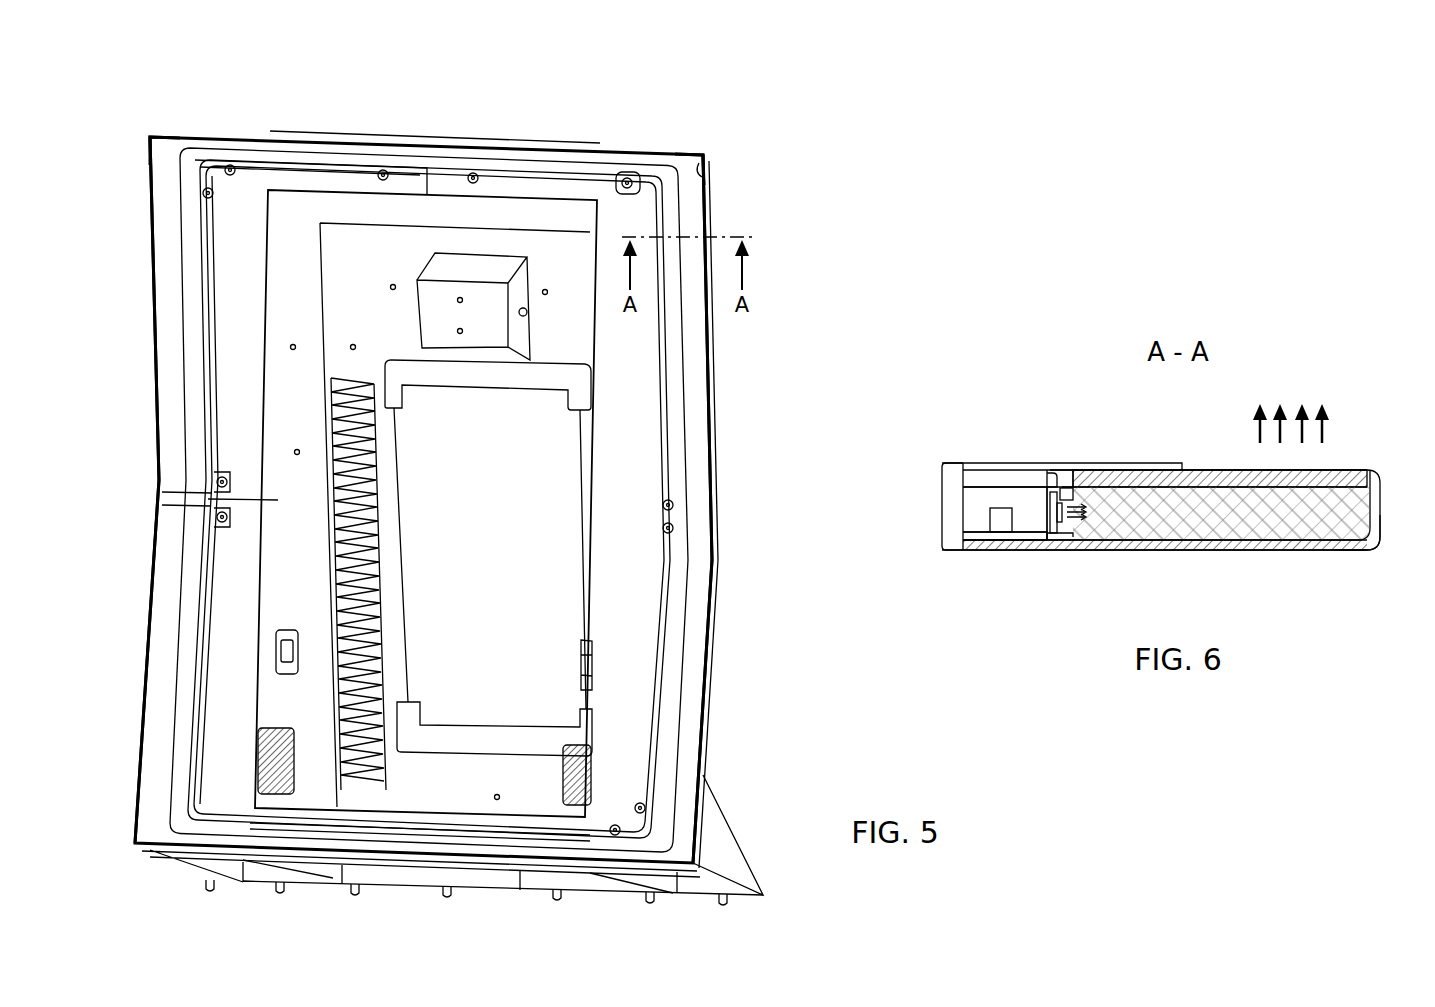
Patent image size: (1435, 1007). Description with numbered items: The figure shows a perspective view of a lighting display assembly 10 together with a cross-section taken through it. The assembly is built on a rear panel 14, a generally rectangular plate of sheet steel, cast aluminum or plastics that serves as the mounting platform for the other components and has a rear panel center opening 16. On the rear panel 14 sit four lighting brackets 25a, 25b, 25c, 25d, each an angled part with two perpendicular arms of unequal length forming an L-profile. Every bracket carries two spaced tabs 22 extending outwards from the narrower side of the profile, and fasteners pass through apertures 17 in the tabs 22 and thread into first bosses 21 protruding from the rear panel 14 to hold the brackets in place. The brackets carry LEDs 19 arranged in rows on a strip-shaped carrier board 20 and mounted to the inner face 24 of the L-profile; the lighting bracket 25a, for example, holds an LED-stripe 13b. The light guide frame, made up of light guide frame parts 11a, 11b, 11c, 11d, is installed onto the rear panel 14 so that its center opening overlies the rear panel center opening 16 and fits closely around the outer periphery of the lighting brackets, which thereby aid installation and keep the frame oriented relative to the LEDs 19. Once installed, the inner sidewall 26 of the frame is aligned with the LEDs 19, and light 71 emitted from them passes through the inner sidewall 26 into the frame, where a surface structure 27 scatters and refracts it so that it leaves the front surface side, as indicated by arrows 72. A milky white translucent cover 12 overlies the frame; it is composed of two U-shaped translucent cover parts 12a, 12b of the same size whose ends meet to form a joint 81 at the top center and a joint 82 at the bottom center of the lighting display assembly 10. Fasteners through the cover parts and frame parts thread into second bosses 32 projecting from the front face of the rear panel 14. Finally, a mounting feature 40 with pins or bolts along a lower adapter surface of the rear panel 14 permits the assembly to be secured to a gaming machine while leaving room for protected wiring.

In FIG. 5, the lighting display assembly 10 is at (706, 134).
In FIG. 5, the light guide frame part 11a is at (708, 197).
In FIG. 6, the light guide frame part 11a is at (1229, 537).
In FIG. 5, the light guide frame part 11b is at (712, 626).
In FIG. 5, the light guide frame part 11c is at (142, 746).
In FIG. 5, the light guide frame part 11d is at (150, 221).
In FIG. 6, the translucent cover 12 is at (1356, 469).
In FIG. 5, the translucent cover part 12a is at (704, 171).
In FIG. 5, the translucent cover part 12b is at (160, 141).
In FIG. 6, the LED-stripe 13b is at (1059, 528).
In FIG. 5, the rear panel 14 is at (345, 255).
In FIG. 6, the rear panel 14 is at (1303, 545).
In FIG. 5, the rear panel center opening 16 is at (543, 440).
In FIG. 5, the aperture 17 is at (624, 177).
In FIG. 6, the LED 19 is at (1066, 535).
In FIG. 6, the strip-shaped carrier board 20 is at (1050, 539).
In FIG. 5, the first boss 21 is at (673, 505).
In FIG. 6, the first boss 21 is at (997, 519).
In FIG. 5, the tab 22 is at (633, 178).
In FIG. 6, the tab 22 is at (977, 538).
In FIG. 6, the inner face 24 is at (1050, 476).
In FIG. 5, the lighting bracket 25a is at (684, 358).
In FIG. 6, the lighting bracket 25a is at (1137, 466).
In FIG. 5, the lighting bracket 25b is at (681, 700).
In FIG. 5, the lighting bracket 25c is at (190, 591).
In FIG. 5, the lighting bracket 25d is at (190, 319).
In FIG. 6, the inner sidewall 26 is at (1075, 497).
In FIG. 6, the surface structure 27 is at (1348, 541).
In FIG. 6, the second boss 32 is at (1145, 553).
In FIG. 5, the mounting feature 40 is at (210, 892).
In FIG. 6, the light 71 is at (1080, 495).
In FIG. 6, the emitted light arrows 72 is at (1330, 408).
In FIG. 5, the joint 81 is at (425, 166).
In FIG. 5, the joint 82 is at (415, 842).